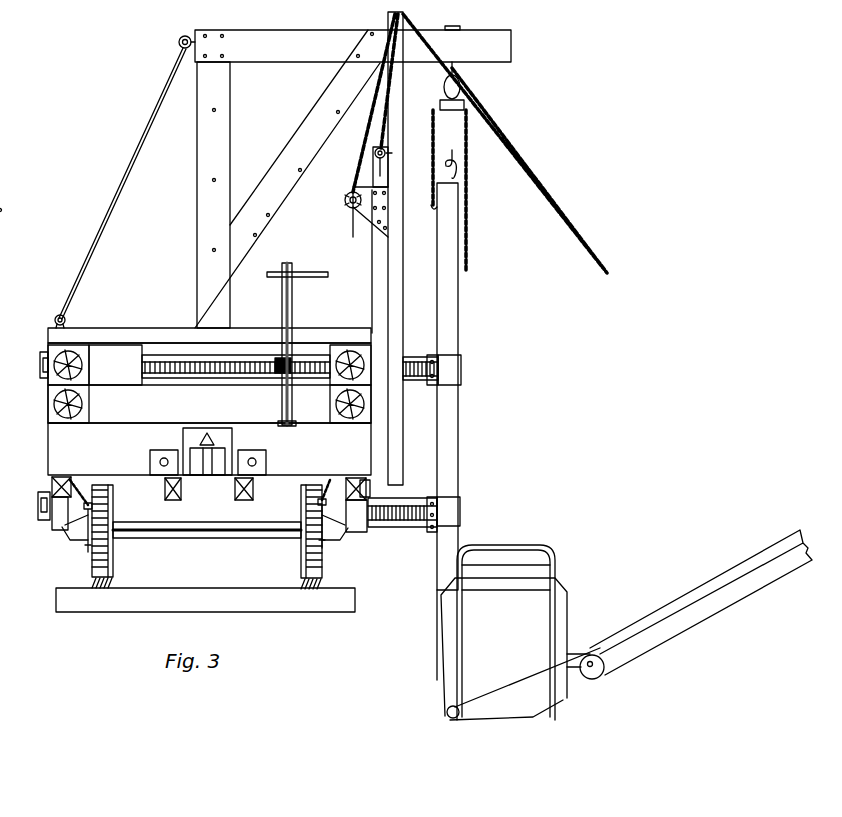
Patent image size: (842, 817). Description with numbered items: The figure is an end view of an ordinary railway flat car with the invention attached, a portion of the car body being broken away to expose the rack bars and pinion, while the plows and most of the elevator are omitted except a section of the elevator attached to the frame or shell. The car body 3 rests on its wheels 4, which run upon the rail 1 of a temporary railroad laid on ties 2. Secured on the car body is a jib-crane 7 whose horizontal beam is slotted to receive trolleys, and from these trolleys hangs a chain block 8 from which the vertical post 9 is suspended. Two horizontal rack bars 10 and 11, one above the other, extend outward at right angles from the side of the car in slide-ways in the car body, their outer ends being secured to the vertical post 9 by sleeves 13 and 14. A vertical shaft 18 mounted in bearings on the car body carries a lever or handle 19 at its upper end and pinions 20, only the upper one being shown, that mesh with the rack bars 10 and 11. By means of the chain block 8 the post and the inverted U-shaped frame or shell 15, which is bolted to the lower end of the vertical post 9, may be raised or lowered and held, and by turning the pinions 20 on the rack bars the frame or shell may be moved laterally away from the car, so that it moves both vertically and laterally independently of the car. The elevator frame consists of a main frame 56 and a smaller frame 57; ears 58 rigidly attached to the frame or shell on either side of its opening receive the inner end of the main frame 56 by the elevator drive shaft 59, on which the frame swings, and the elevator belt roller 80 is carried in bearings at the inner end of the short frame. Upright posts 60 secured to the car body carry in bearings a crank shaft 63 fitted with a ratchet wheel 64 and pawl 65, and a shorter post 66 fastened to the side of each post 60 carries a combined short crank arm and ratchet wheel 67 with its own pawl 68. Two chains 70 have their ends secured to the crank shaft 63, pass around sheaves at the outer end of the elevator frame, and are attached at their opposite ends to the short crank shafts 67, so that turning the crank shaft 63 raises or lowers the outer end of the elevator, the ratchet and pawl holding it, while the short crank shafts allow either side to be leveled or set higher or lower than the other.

The rail 1 is at (113, 573).
The ties 2 is at (207, 588).
The body of flat car 3 is at (199, 414).
The car wheels 4 is at (92, 563).
The jib-crane 7 is at (197, 184).
The chain block 8 is at (445, 92).
The vertical post 9 is at (458, 300).
The horizontal rack bar 10 is at (418, 357).
The horizontal rack bar 11 is at (410, 487).
The sleeve 13 is at (461, 362).
The sleeve 14 is at (460, 506).
The frame or shell 15 is at (542, 612).
The vertical shaft 18 is at (292, 293).
The lever or handle 19 is at (310, 272).
The pinion 20 is at (265, 378).
The main elevator frame 56 is at (705, 625).
The smaller elevator frame 57 is at (510, 718).
The ears 58 is at (582, 652).
The elevator drive shaft 59 is at (603, 675).
The upright post 60 is at (403, 242).
The crank shaft 63 is at (345, 202).
The ratchet wheel 64 is at (348, 195).
The pawl 65 is at (366, 188).
The shorter post 66 is at (372, 283).
The combined short crank arm and ratchet wheel 67 is at (386, 152).
The pawl 68 is at (386, 155).
The chains 70 is at (375, 148).
The elevator belt roller 80 is at (456, 720).